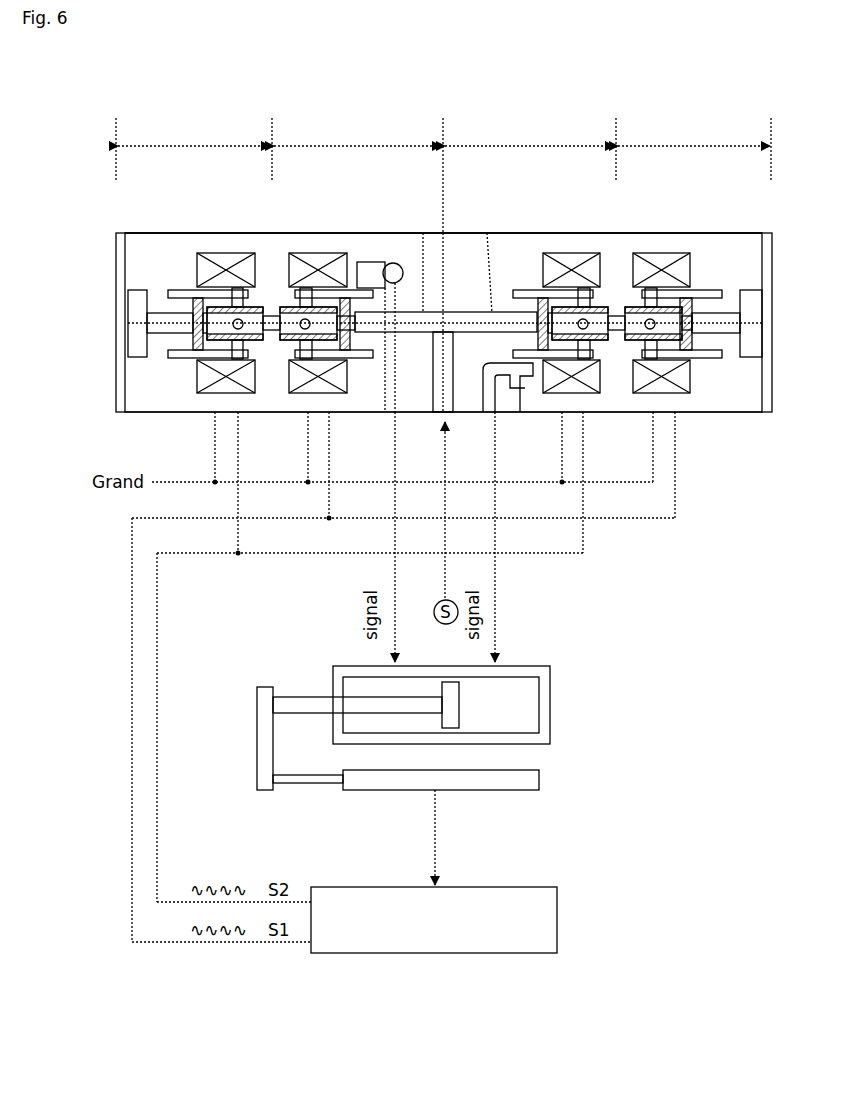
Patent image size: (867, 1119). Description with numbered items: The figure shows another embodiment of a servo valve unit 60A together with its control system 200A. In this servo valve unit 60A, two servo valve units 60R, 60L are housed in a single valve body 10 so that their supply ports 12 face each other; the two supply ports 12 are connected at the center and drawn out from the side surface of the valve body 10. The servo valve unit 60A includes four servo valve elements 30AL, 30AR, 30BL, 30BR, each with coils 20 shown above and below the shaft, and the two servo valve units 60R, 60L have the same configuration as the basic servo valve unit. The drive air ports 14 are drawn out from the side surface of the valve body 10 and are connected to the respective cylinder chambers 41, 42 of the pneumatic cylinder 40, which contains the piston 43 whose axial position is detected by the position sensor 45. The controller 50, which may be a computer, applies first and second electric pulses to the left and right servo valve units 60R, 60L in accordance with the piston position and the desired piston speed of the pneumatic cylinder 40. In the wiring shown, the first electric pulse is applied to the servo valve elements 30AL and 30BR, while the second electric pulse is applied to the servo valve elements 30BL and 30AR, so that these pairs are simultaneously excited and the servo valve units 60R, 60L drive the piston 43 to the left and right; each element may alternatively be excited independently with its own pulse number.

The control system 200A is at (773, 77).
The valve body 10 is at (178, 410).
The supply port 12 is at (423, 233).
The drive air port 14 is at (372, 262).
The coil 20 is at (224, 250).
The servo valve element 30BL is at (194, 147).
The servo valve element 30AL is at (357, 130).
The servo valve element 30AR is at (529, 174).
The servo valve element 30BR is at (694, 147).
The pneumatic cylinder 40 is at (572, 708).
The cylinder chamber 41 is at (520, 690).
The cylinder chamber 42 is at (347, 690).
The piston 43 is at (450, 728).
The position sensor 45 is at (540, 780).
The controller 50 is at (433, 968).
The servo valve unit 60A is at (711, 430).
The servo valve unit 60L is at (262, 250).
The servo valve unit 60R is at (648, 250).